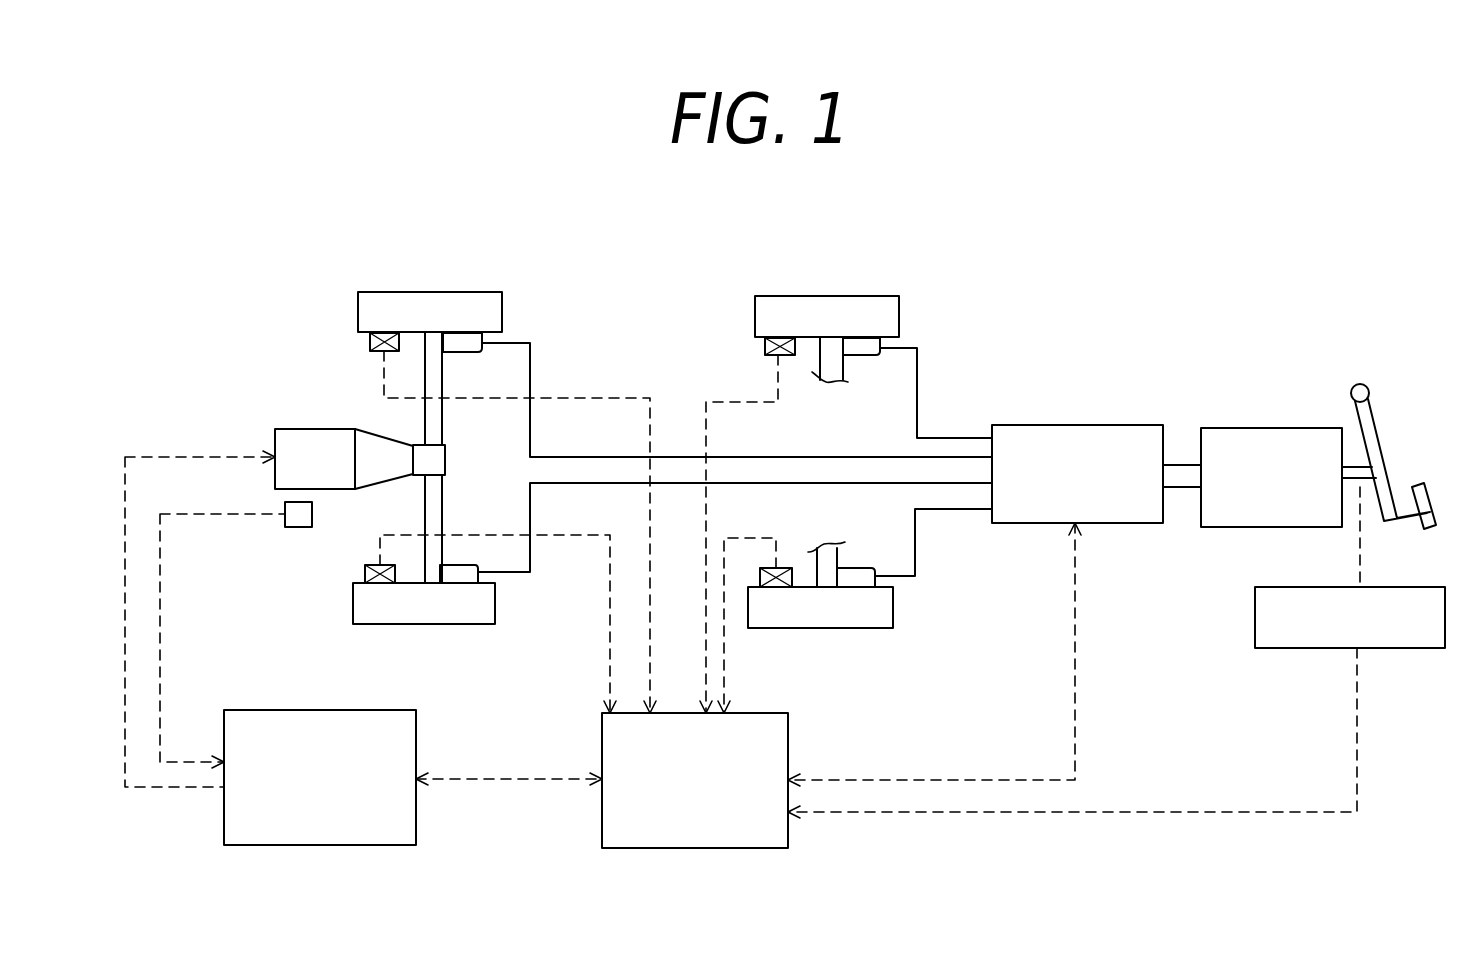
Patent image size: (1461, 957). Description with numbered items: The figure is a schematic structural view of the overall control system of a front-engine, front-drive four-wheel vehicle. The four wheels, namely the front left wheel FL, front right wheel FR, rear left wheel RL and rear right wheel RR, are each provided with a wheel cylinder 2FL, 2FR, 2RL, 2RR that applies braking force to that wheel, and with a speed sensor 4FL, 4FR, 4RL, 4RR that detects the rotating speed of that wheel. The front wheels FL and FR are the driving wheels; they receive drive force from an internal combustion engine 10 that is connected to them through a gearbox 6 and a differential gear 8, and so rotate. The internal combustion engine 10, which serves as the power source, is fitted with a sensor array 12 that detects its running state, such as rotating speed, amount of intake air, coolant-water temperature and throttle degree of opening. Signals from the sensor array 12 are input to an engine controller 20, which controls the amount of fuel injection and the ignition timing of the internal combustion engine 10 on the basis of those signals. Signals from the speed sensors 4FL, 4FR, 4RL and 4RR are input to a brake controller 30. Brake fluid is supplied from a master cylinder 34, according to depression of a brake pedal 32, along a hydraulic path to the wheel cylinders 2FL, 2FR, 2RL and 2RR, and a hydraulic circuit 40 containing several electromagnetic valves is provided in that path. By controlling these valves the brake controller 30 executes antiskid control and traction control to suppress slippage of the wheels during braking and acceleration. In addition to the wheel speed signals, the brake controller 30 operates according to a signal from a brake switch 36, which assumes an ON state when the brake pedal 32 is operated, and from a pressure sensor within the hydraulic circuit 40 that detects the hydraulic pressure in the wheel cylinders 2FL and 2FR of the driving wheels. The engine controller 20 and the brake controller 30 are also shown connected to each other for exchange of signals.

The front right wheel FR is at (488, 292).
The front left wheel FL is at (468, 613).
The rear right wheel RR is at (878, 298).
The rear left wheel RL is at (868, 618).
The internal combustion engine 10 is at (301, 445).
The gearbox 6 is at (388, 455).
The differential gear 8 is at (440, 456).
The sensor array 12 is at (298, 520).
The speed sensor 4FR is at (370, 345).
The speed sensor 4FL is at (365, 572).
The speed sensor 4RR is at (765, 347).
The speed sensor 4RL is at (760, 575).
The wheel cylinder 2FR is at (462, 349).
The wheel cylinder 2FL is at (463, 573).
The wheel cylinder 2RR is at (866, 354).
The wheel cylinder 2RL is at (857, 578).
The hydraulic circuit 40 is at (1105, 425).
The master cylinder 34 is at (1283, 428).
The brake pedal 32 is at (1427, 490).
The brake switch 36 is at (1395, 587).
The engine controller 20 is at (357, 710).
The brake controller 30 is at (790, 735).